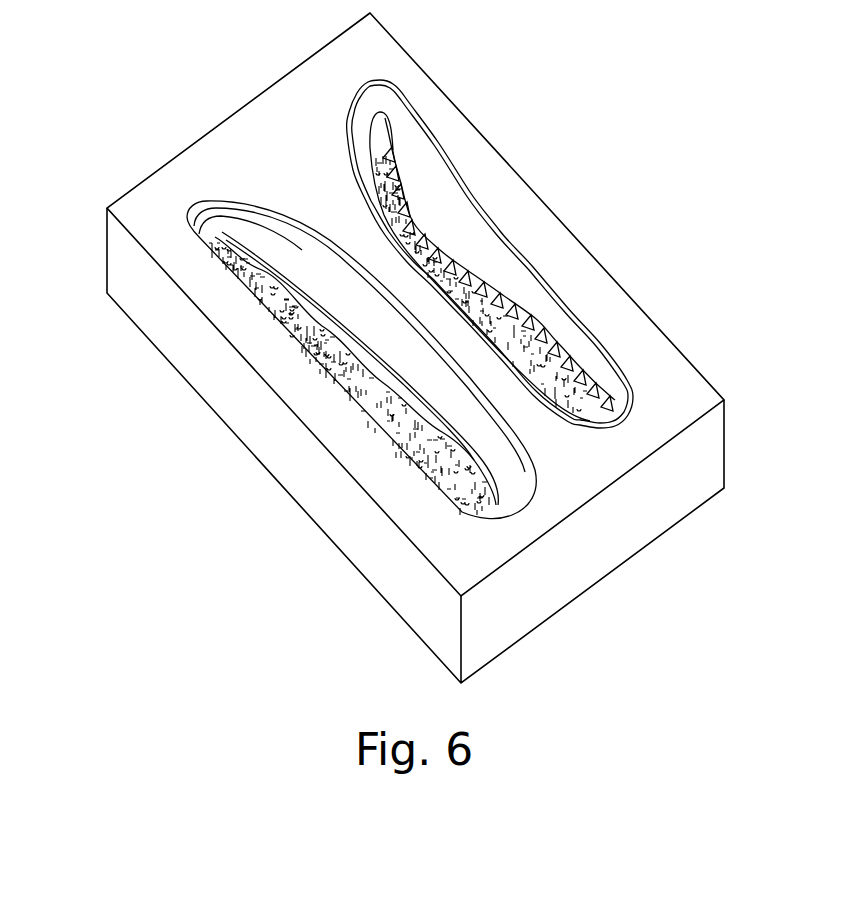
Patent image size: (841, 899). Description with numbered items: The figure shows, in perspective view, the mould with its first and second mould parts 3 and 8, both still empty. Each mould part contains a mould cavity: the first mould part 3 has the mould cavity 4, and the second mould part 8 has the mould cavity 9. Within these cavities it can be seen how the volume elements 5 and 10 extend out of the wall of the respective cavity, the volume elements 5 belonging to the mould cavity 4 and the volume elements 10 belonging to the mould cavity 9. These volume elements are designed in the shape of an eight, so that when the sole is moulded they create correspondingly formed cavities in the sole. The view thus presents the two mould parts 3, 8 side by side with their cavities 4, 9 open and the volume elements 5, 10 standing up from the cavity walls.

The first mould part 3 is at (163, 238).
The mould cavity 4 is at (311, 278).
The volume elements 5 is at (385, 432).
The second mould part 8 is at (413, 88).
The mould cavity 9 is at (436, 180).
The volume elements 10 is at (530, 330).